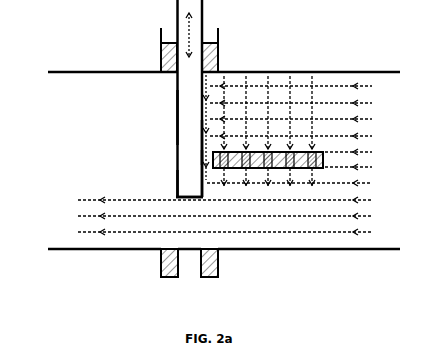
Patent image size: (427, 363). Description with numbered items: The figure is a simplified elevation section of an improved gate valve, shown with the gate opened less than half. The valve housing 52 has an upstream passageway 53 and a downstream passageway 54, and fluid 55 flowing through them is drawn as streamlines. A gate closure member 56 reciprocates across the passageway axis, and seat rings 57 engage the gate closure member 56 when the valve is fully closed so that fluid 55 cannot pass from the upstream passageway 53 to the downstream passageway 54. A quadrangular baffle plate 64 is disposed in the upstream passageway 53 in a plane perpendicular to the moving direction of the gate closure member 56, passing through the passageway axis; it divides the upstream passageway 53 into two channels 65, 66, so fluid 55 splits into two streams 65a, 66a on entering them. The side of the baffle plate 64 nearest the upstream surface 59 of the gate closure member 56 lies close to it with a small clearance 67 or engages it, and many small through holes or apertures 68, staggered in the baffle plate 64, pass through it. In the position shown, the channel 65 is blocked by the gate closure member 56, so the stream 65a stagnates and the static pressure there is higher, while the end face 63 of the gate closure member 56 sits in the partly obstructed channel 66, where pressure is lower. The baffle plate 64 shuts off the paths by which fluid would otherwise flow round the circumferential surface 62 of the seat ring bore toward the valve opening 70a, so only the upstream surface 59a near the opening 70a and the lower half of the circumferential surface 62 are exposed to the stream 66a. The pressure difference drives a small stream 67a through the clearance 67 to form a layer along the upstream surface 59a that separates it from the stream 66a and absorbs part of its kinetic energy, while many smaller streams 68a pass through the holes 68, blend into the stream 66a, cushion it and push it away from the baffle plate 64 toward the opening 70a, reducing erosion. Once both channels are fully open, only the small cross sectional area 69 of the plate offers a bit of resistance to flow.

The valve housing 52 is at (223, 252).
The upstream passageway 53 is at (372, 160).
The downstream passageway 54 is at (108, 142).
The fluid 55 is at (335, 156).
The gate closure member 56 is at (197, 78).
The seat rings 57 is at (200, 266).
The upstream surface 59 is at (225, 142).
The upstream surface close to valve opening 59a is at (202, 173).
The circumferential surface of bore of seat ring 62 is at (167, 72).
The end face of gate closure member 63 is at (203, 198).
The baffle plate 64 is at (328, 151).
The channel 65 is at (338, 118).
The stream 65a is at (330, 110).
The channel 66 is at (313, 223).
The stream 66a is at (262, 218).
The clearance 67 is at (202, 157).
The small stream 67a is at (200, 140).
The small through holes or apertures 68 is at (280, 170).
The smaller streams 68a is at (250, 140).
The small cross sectional area of the plate 69 is at (325, 168).
The valve opening 70a is at (205, 196).